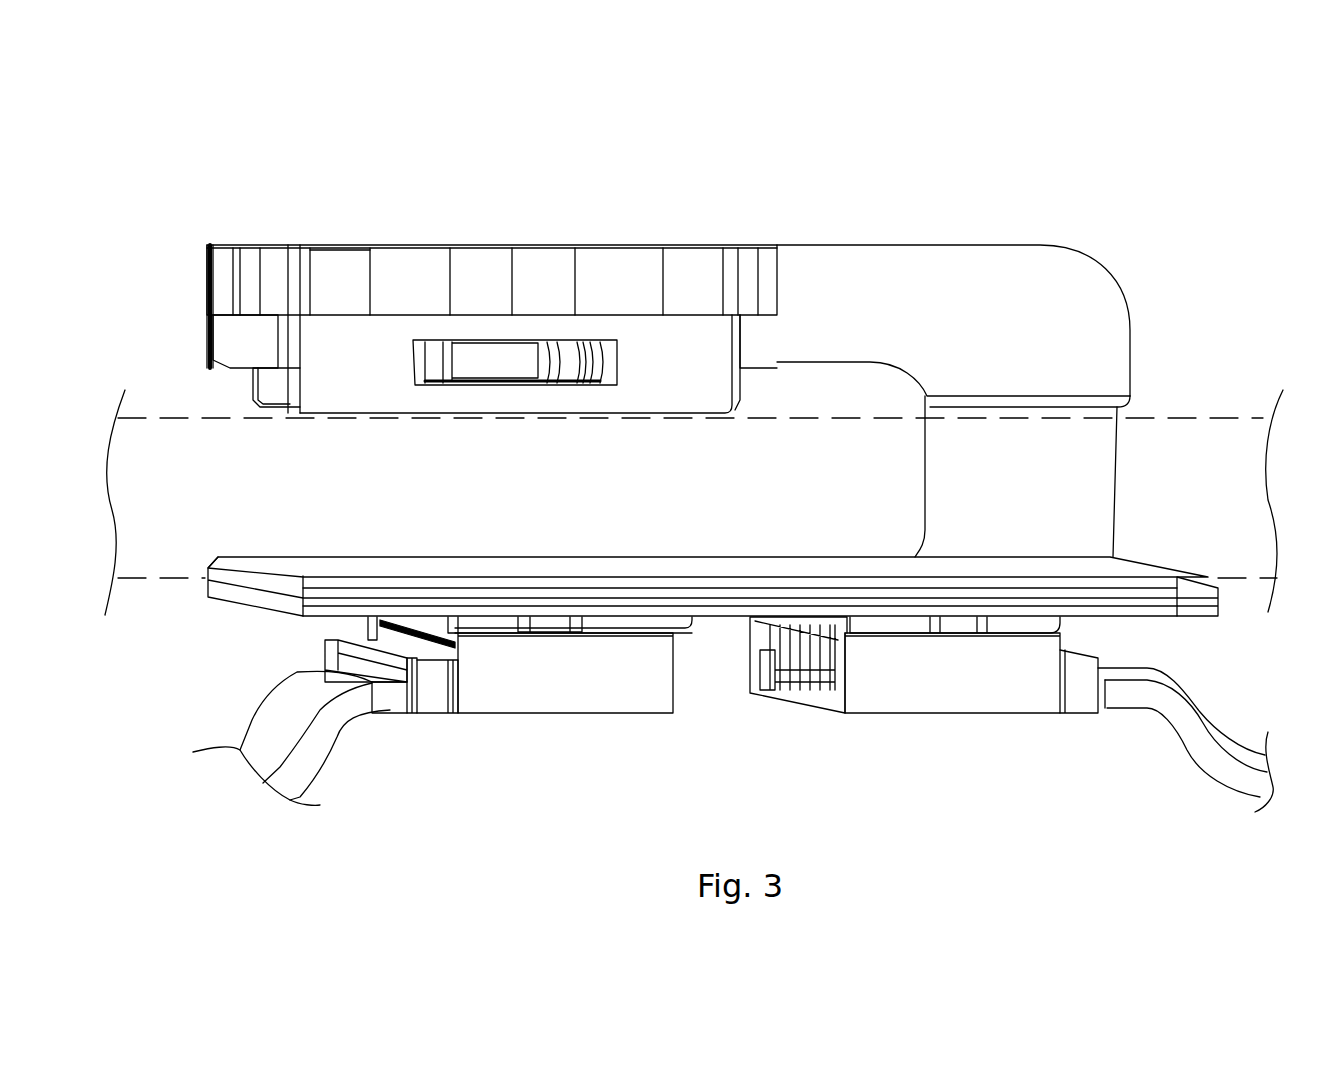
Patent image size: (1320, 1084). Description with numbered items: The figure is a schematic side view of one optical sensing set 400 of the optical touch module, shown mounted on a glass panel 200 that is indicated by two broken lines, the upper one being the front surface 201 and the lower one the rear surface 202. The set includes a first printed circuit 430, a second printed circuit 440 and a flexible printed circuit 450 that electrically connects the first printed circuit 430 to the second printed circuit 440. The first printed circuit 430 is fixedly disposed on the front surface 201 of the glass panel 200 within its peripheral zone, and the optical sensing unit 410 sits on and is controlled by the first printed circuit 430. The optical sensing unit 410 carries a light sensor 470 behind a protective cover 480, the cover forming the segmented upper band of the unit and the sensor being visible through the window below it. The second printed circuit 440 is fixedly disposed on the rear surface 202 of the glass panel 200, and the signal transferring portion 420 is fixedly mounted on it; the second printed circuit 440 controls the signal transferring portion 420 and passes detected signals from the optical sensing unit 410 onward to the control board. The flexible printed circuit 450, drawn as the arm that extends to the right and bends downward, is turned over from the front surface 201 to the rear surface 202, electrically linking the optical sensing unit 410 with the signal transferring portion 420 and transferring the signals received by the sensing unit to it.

The optical sensing set 400 is at (142, 118).
The optical sensing unit 410 is at (614, 233).
The flexible printed circuit 450 is at (806, 238).
The first printed circuit 430 is at (207, 276).
The protective cover 480 is at (333, 283).
The light sensor 470 is at (472, 357).
The glass panel 200 is at (694, 491).
The front surface 201 is at (170, 418).
The rear surface 202 is at (170, 580).
The second printed circuit 440 is at (222, 620).
The signal transferring portion 420 is at (648, 730).